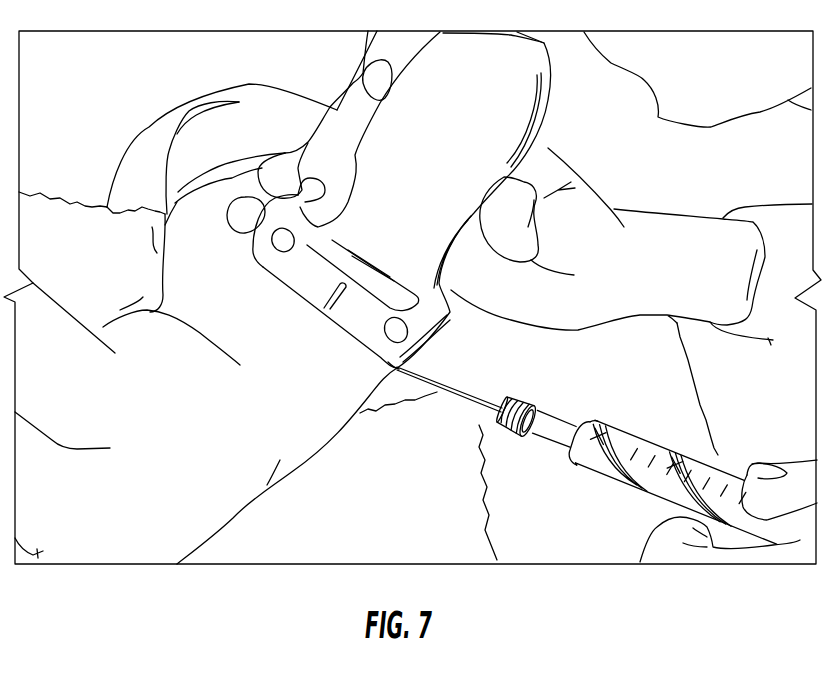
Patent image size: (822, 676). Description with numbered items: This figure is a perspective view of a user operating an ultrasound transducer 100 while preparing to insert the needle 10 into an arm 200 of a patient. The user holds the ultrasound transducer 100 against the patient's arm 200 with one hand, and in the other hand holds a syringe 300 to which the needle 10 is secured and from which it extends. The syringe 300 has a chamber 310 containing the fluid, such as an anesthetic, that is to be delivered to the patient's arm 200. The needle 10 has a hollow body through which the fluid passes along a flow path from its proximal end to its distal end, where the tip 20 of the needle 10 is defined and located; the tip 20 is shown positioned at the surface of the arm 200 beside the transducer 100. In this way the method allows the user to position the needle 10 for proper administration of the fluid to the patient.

The needle 10 is at (473, 402).
The tip 20 is at (401, 372).
The ultrasound transducer 100 is at (512, 126).
The arm 200 is at (197, 276).
The syringe 300 is at (642, 471).
The chamber 310 is at (537, 424).